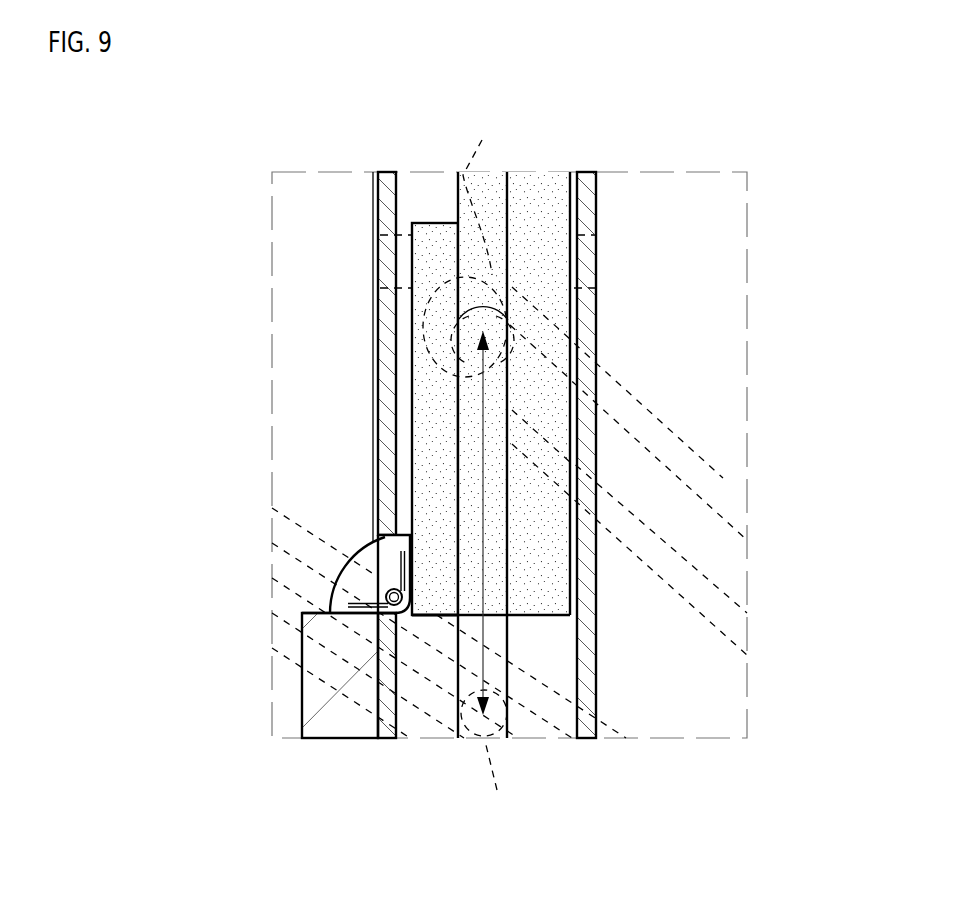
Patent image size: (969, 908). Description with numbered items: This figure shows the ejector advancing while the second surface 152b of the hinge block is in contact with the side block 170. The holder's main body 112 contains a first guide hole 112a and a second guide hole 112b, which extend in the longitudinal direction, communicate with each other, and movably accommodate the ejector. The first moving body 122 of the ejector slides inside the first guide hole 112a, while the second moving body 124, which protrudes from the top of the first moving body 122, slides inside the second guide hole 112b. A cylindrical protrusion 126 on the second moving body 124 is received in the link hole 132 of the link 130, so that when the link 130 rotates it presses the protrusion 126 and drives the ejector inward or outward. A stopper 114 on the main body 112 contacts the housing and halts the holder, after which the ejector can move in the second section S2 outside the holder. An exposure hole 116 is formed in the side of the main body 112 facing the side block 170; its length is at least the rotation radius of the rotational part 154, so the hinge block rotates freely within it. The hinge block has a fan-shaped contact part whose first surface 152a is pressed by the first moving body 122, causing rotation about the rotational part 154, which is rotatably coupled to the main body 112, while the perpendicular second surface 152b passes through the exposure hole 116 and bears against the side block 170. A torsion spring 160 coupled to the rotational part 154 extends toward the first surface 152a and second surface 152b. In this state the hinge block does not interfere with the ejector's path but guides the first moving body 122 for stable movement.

The main body 112 is at (584, 176).
The first guide hole 112a is at (443, 693).
The second guide hole 112b is at (490, 637).
The stopper 114 is at (372, 213).
The exposure hole 116 is at (380, 527).
The first moving body 122 is at (437, 397).
The second moving body 124 is at (477, 447).
The protrusion 126 is at (471, 466).
The link 130 is at (731, 488).
The link hole 132 is at (726, 566).
The first surface 152a is at (427, 615).
The second surface 152b is at (342, 616).
The rotational part 154 is at (395, 588).
The spring 160 is at (387, 605).
The side block 170 is at (335, 712).
The second section S2 is at (485, 674).